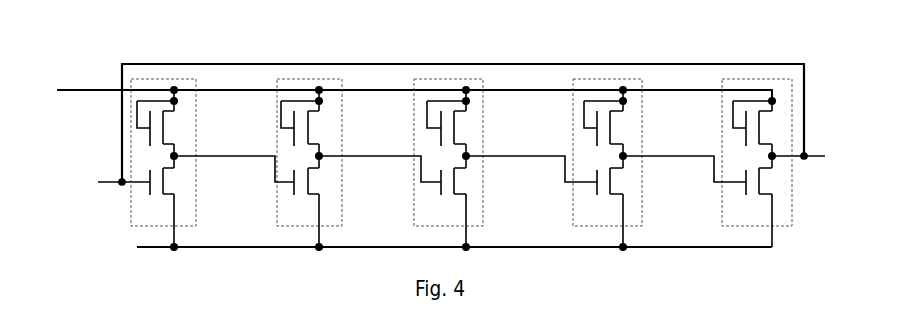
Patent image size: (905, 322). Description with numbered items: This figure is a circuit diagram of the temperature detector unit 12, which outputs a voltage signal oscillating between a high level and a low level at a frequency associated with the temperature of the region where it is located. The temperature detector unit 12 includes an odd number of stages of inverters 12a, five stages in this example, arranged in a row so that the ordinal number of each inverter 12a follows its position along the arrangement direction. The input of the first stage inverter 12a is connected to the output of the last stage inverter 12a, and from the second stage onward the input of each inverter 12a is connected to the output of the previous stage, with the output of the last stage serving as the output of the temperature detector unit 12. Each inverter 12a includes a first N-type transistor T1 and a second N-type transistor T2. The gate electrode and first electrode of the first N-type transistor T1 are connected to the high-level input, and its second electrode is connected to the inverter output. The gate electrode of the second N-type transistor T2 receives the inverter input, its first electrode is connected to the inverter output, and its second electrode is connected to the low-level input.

The temperature detector unit 12 is at (440, 136).
The inverter 12a is at (197, 112).
The first N-type transistor T1 is at (463, 123).
The second N-type transistor T2 is at (469, 201).